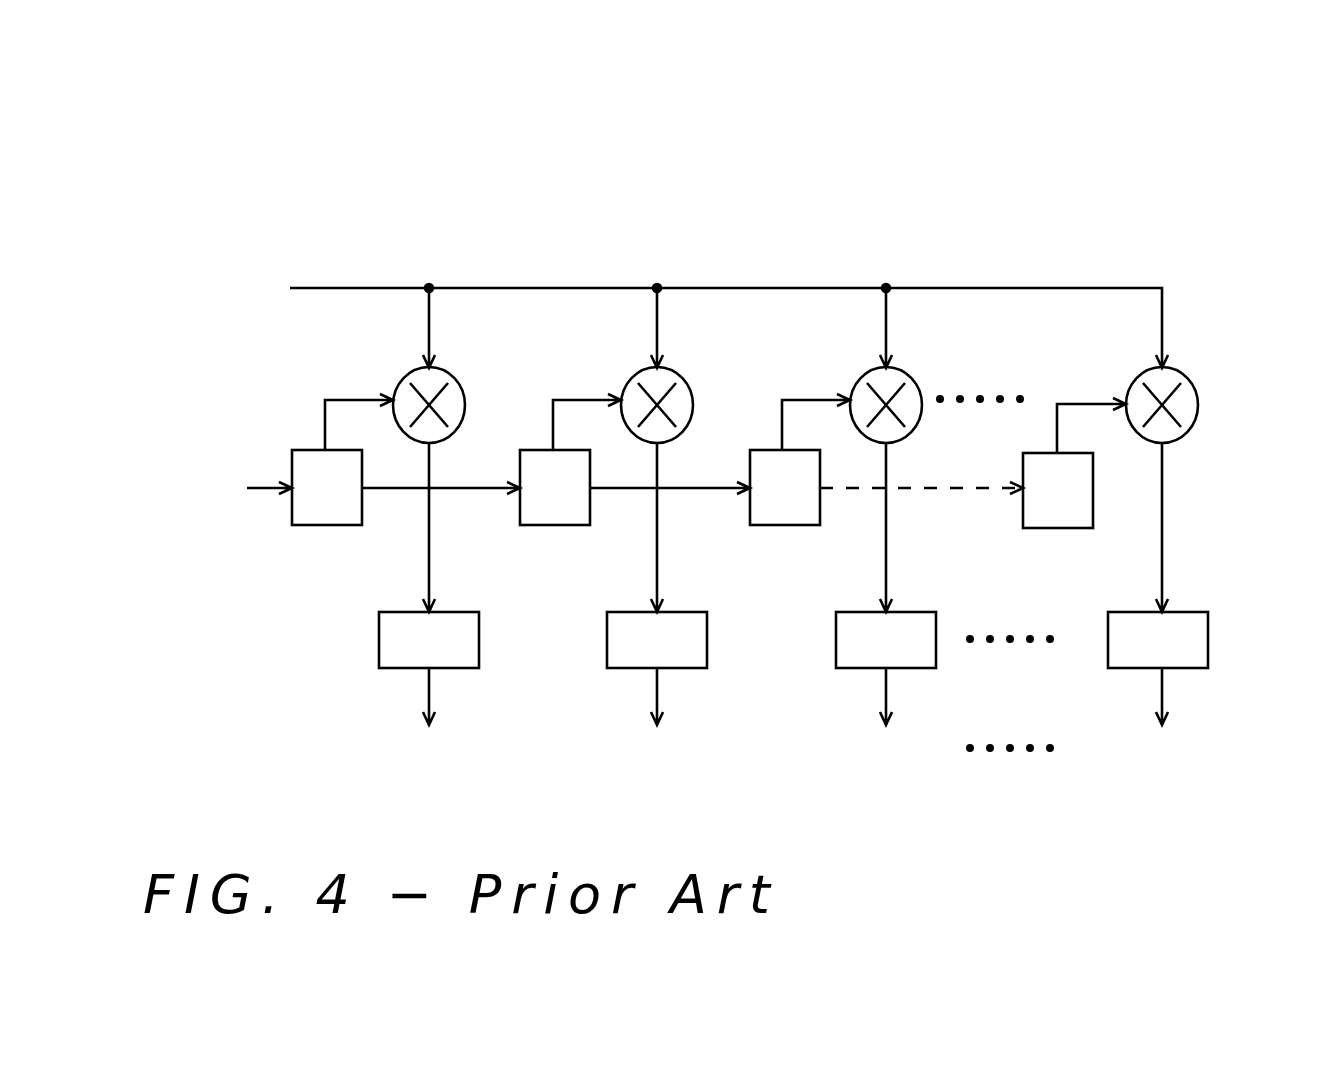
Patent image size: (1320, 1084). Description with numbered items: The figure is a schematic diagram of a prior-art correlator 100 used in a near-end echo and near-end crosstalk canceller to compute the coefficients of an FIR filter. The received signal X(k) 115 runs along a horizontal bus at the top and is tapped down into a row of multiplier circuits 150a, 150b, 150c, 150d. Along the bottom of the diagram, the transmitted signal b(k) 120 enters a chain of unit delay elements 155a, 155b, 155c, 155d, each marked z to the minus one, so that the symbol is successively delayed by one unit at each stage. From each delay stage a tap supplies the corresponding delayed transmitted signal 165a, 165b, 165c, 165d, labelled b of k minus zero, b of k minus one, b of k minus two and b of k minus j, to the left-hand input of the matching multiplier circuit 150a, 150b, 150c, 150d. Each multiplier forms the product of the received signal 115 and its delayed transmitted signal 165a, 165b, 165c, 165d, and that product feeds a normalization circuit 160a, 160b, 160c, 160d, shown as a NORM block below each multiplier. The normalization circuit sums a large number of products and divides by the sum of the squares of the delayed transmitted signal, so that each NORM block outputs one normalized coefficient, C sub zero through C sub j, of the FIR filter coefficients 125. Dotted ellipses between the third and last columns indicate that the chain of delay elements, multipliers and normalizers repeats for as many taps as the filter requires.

The correlator 100 is at (1060, 162).
The received signal X(k) 115 is at (248, 273).
The transmitted signal b(k) 120 is at (218, 510).
The coefficients C0 through Cj 125 is at (405, 772).
The multiplier circuit 150a is at (434, 368).
The multiplier circuit 150b is at (662, 368).
The multiplier circuit 150c is at (892, 368).
The multiplier circuit 150d is at (1169, 368).
The unit delay element 155a is at (312, 526).
The unit delay element 155b is at (571, 526).
The unit delay element 155c is at (801, 526).
The unit delay element 155d is at (1076, 530).
The normalization circuit 160a is at (380, 640).
The normalization circuit 160b is at (608, 640).
The normalization circuit 160c is at (836, 640).
The normalization circuit 160d is at (1108, 640).
The delayed transmitted signal b(k-0) 165a is at (325, 433).
The delayed transmitted signal b(k-1) 165b is at (553, 433).
The delayed transmitted signal b(k-2) 165c is at (782, 433).
The delayed transmitted signal b(k-j) 165d is at (1057, 436).